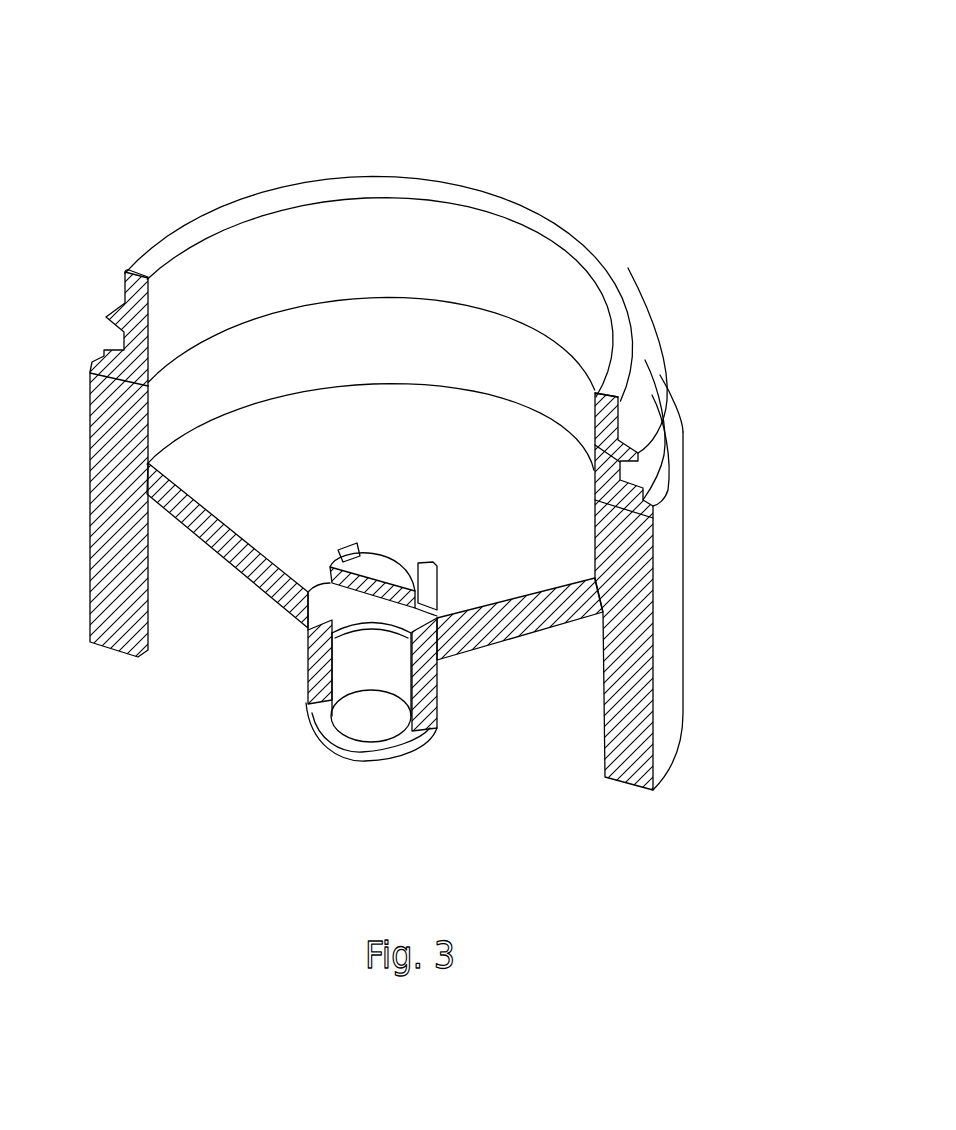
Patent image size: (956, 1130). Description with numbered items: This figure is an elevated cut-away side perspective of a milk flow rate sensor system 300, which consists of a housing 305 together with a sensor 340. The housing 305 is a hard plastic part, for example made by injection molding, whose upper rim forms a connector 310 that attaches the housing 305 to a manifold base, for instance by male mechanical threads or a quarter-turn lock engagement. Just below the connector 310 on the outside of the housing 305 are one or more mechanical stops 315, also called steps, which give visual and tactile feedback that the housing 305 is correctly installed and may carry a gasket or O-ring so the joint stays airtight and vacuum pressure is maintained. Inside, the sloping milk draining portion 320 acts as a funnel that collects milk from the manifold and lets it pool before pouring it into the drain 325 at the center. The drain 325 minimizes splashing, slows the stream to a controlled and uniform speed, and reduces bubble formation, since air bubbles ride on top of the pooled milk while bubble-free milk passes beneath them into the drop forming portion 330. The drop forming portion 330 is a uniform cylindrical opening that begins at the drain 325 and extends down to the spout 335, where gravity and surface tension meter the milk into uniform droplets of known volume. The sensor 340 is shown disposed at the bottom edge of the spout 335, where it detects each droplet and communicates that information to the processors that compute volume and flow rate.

The milk flow rate sensor system 300 is at (553, 39).
The housing 305 is at (668, 657).
The connector 310 is at (550, 212).
The mechanical stops 315 is at (683, 430).
The milk draining portion 320 is at (520, 555).
The drain 325 is at (330, 566).
The drop forming portion 330 is at (380, 640).
The spout 335 is at (373, 712).
The sensor 340 is at (316, 740).